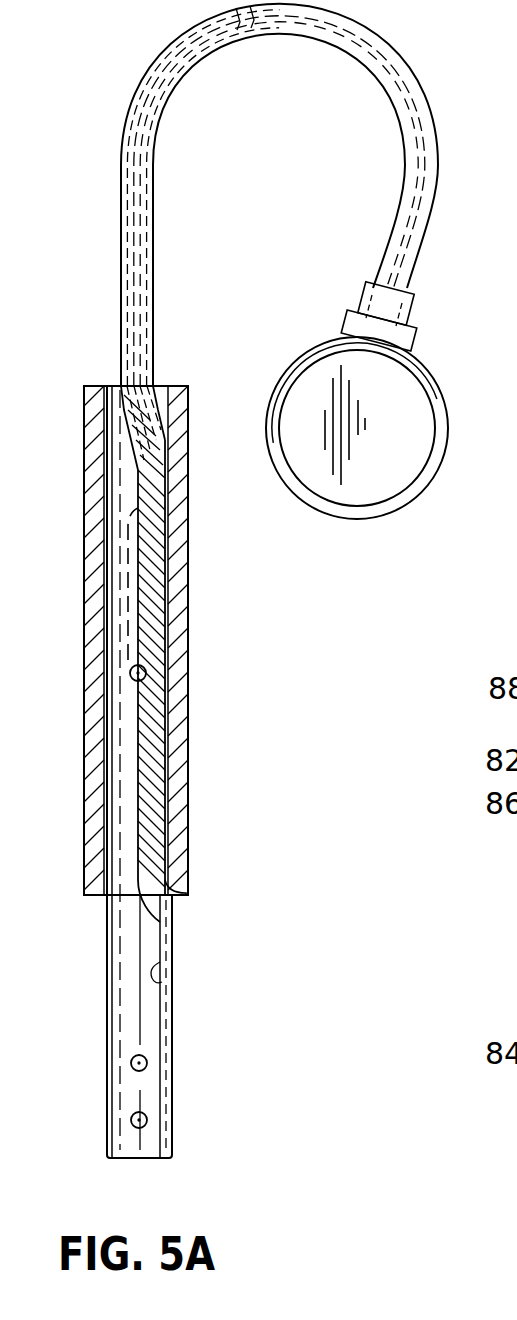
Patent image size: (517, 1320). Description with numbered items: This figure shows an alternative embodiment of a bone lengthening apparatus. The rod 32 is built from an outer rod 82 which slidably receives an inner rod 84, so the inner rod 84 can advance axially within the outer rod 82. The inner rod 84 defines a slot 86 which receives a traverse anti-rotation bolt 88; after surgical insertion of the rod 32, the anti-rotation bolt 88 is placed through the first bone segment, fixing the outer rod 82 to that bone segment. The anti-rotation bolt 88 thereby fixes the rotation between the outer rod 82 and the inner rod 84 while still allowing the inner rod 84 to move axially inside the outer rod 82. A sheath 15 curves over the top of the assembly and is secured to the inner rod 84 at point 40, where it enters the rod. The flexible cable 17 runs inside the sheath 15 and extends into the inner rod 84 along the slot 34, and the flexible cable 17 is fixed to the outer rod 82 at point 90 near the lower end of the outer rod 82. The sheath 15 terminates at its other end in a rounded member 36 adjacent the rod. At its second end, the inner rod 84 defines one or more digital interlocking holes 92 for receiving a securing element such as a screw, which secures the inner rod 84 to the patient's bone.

The sheath 15 is at (408, 190).
The flexible cable 17 is at (155, 184).
The rod 32 is at (84, 477).
The slot 34 is at (170, 962).
The bulb 36 is at (408, 400).
The point 40 is at (158, 392).
The outer rod 82 is at (98, 750).
The inner rod 84 is at (125, 996).
The slot 86 is at (128, 557).
The anti-rotation bolt 88 is at (130, 675).
The point 90 is at (188, 888).
The digital interlocking holes 92 is at (147, 1062).